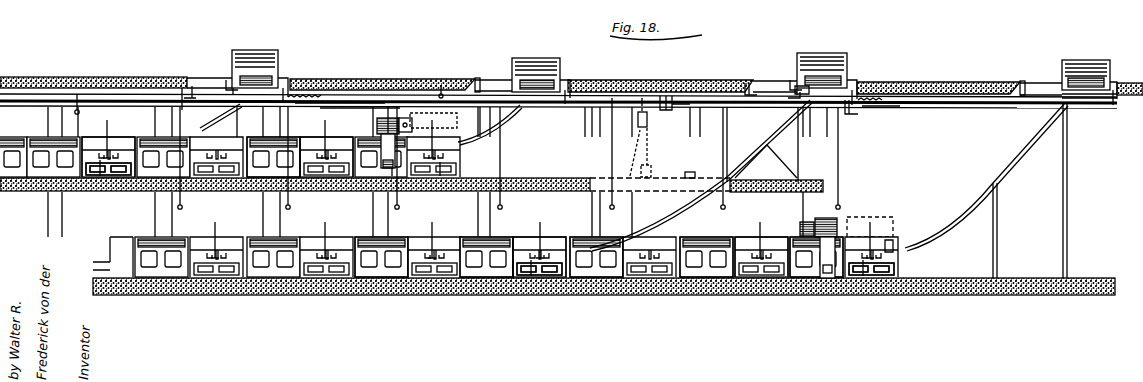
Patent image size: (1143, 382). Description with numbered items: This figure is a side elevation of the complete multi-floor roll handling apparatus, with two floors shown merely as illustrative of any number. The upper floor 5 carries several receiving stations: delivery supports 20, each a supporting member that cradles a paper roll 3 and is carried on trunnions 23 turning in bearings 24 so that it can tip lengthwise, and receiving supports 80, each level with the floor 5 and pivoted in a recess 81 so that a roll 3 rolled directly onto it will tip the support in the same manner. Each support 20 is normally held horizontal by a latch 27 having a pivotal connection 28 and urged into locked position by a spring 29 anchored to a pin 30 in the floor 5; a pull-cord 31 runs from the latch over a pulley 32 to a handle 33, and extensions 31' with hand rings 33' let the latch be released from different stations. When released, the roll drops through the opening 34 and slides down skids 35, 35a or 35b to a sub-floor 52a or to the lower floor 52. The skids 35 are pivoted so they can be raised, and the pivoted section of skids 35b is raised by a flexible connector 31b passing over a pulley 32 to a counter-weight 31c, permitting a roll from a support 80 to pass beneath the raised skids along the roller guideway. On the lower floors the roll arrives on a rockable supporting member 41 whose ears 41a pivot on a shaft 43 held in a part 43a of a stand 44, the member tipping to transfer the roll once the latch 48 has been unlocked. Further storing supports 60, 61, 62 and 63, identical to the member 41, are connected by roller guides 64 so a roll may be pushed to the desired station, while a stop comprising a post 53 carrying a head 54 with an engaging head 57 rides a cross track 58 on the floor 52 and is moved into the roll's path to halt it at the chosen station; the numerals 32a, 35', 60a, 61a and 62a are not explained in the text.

The roll 3 is at (255, 50).
The floor 5 is at (622, 82).
The supporting member 20 is at (232, 80).
The trunnions 23 is at (258, 78).
The bearings 24 is at (797, 92).
The latch 27 is at (286, 79).
The pivotal connection 28 is at (302, 96).
The spring 29 is at (332, 102).
The pin 30 is at (360, 107).
The pull-cord 31 is at (558, 131).
The extensions 31' is at (558, 81).
The flexible connector 31b is at (645, 142).
The counter-weight 31c is at (648, 118).
The pulley 32 is at (852, 112).
The bracket 32a is at (666, 95).
The handle 33 is at (520, 162).
The hand rings 33' is at (229, 85).
The opening 34 is at (188, 88).
The skids 35 is at (211, 117).
The brace 35' is at (488, 125).
The skids 35a is at (1018, 155).
The skids 35b is at (767, 139).
The rockable supporting member 41 is at (440, 178).
The ears 41a is at (100, 178).
The shaft 43 is at (96, 173).
The part of stand 43a is at (118, 173).
The stand 44 is at (131, 178).
The latch 48 is at (105, 126).
The floor 52 is at (1082, 284).
The sub-floor 52a is at (552, 171).
The post 53 is at (838, 220).
The head 54 is at (377, 121).
The engaging head 57 is at (412, 123).
The cross track 58 is at (826, 278).
The storing support 60 is at (750, 240).
The car 60a is at (335, 142).
The storing support 61 is at (690, 240).
The car 61a is at (262, 142).
The storing support 62 is at (548, 240).
The car 62a is at (118, 140).
The storing support 63 is at (470, 240).
The roller guides 64 is at (365, 240).
The receiving support 80 is at (508, 81).
The recess 81 is at (479, 88).